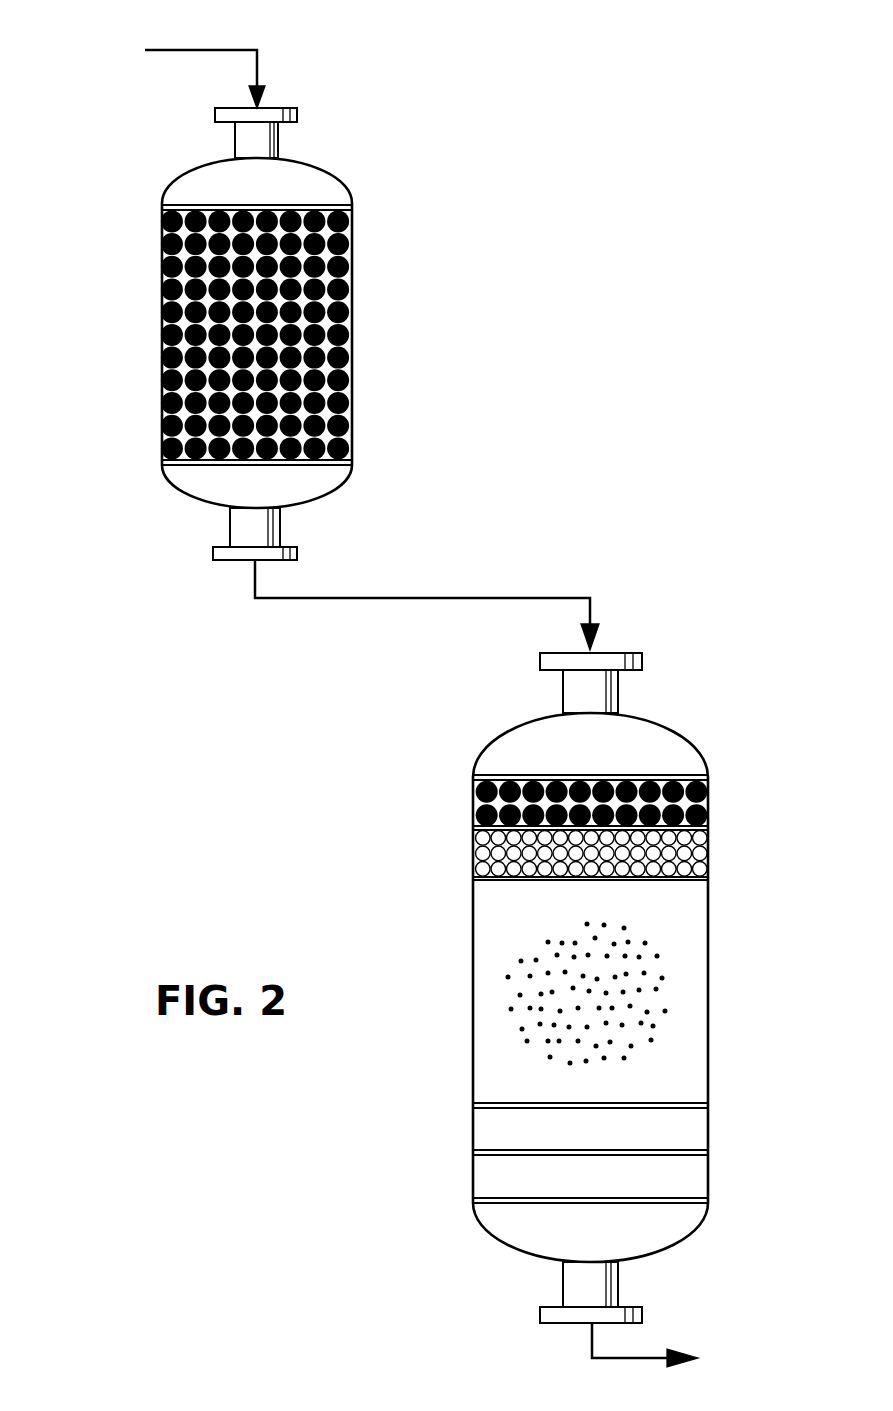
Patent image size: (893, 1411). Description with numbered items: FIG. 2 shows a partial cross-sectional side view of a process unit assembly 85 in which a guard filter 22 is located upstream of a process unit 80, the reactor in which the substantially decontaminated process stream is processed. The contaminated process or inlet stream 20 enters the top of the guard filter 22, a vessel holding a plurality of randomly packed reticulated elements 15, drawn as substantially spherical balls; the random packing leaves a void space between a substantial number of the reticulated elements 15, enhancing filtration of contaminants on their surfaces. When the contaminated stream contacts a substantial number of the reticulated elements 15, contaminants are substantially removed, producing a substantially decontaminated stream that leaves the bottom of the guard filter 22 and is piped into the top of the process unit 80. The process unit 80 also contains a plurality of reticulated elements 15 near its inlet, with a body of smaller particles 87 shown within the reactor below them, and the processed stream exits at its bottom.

The inlet stream 20 is at (208, 50).
The reticulated elements 15 is at (160, 268).
The guard filter 22 is at (352, 340).
The process unit assembly 85 is at (559, 428).
The process unit 80 is at (708, 923).
The catalyst particles 87 is at (660, 990).